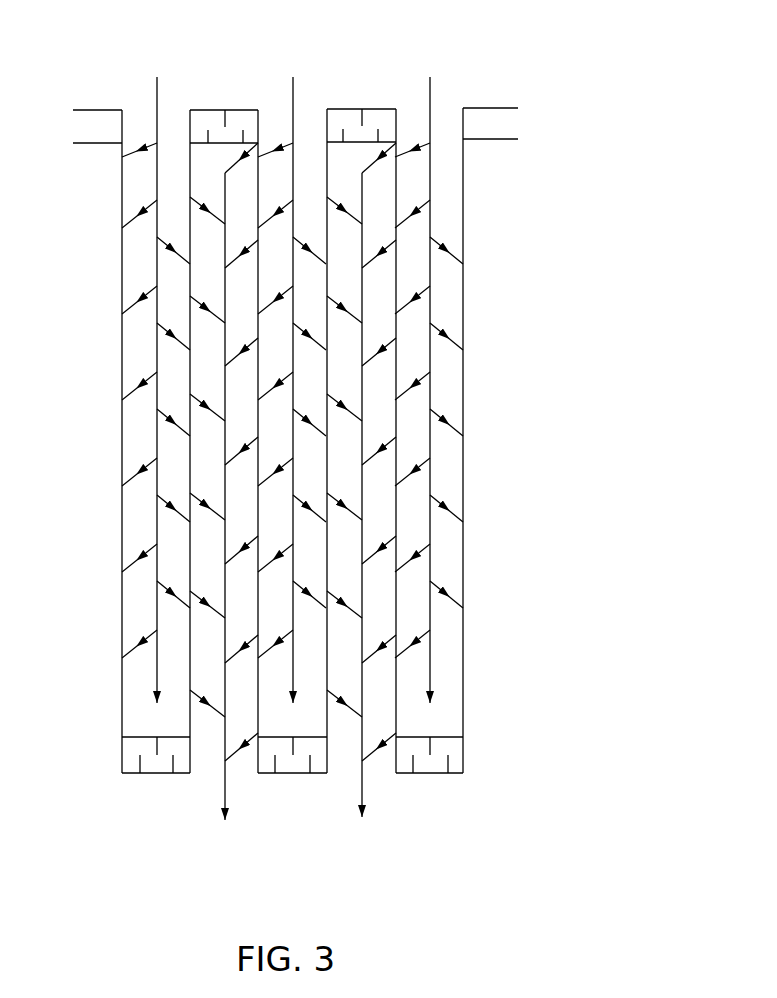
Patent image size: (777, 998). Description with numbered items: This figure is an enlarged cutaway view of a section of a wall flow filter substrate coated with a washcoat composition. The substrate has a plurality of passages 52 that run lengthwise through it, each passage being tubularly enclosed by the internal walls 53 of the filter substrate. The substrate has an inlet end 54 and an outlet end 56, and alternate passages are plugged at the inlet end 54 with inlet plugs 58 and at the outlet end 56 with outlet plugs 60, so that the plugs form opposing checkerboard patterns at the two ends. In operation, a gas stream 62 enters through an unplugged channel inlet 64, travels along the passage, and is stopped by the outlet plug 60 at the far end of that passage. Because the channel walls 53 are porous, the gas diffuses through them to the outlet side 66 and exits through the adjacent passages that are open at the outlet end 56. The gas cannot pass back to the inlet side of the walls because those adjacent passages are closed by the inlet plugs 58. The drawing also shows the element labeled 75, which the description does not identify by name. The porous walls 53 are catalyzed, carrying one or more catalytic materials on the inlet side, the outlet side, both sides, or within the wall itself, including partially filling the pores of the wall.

The passages 52 is at (165, 153).
The internal walls 53 is at (327, 403).
The inlet end 54 is at (507, 90).
The outlet end 56 is at (470, 783).
The inlet plugs 58 is at (87, 117).
The outlet plugs 60 is at (155, 774).
The gas stream 62 is at (295, 80).
The channel inlet 64 is at (289, 134).
The outlet side 66 is at (279, 779).
The flow directing fins 75 is at (123, 423).